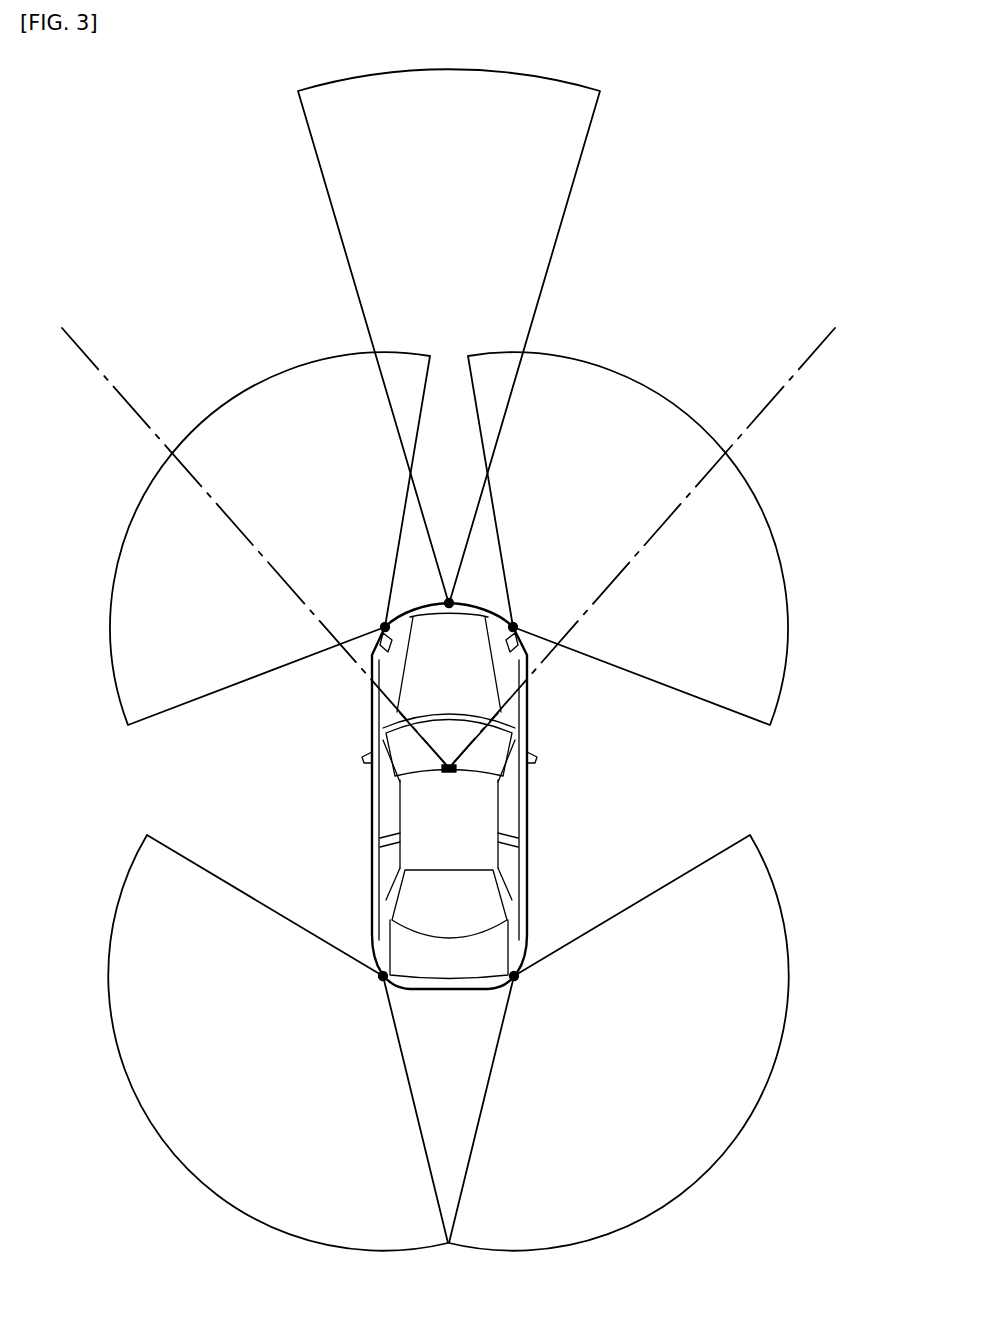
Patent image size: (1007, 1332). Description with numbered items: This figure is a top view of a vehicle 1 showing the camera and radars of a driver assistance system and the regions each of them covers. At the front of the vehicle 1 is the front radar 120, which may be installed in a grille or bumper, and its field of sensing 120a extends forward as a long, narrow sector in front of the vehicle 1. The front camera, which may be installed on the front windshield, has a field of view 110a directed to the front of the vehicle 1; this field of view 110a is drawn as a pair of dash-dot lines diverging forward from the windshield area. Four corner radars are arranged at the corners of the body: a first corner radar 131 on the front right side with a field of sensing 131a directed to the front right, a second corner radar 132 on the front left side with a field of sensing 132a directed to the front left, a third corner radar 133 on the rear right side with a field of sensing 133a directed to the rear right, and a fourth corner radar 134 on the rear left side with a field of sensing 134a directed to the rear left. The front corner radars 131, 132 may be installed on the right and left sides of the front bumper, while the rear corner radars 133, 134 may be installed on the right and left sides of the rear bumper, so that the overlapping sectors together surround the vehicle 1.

The vehicle 1 is at (548, 799).
The field of view 110a is at (790, 378).
The front radar 120 is at (449, 603).
The field of sensing 120a is at (540, 207).
The first corner radar 131 is at (513, 627).
The field of sensing 131a is at (654, 408).
The second corner radar 132 is at (385, 627).
The field of sensing 132a is at (242, 408).
The third corner radar 133 is at (514, 976).
The field of sensing 133a is at (740, 1125).
The fourth corner radar 134 is at (383, 976).
The field of sensing 134a is at (156, 1125).